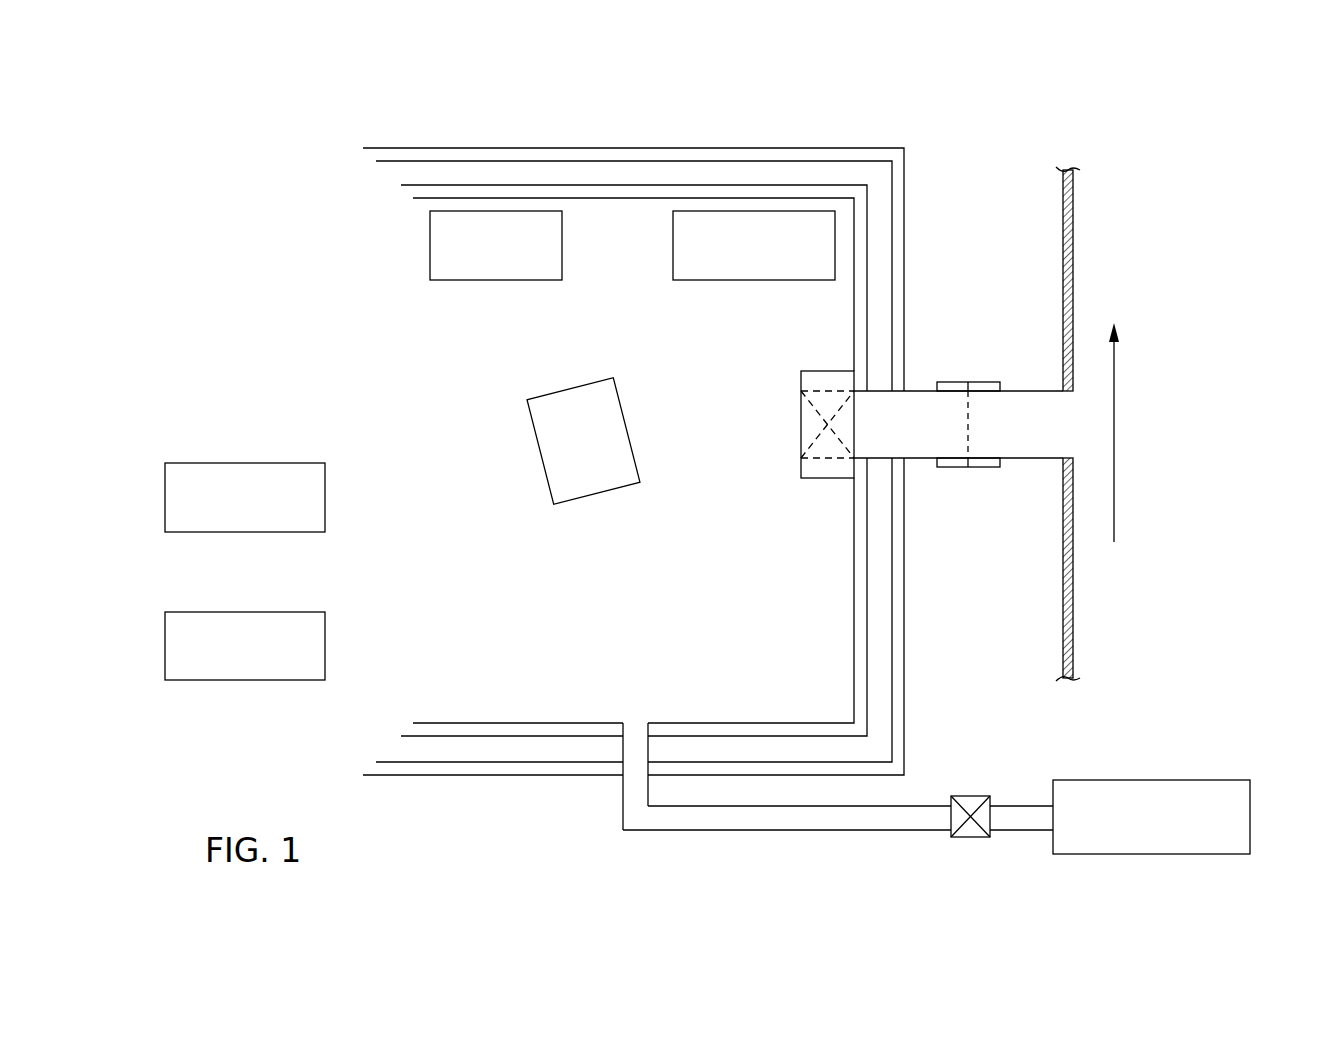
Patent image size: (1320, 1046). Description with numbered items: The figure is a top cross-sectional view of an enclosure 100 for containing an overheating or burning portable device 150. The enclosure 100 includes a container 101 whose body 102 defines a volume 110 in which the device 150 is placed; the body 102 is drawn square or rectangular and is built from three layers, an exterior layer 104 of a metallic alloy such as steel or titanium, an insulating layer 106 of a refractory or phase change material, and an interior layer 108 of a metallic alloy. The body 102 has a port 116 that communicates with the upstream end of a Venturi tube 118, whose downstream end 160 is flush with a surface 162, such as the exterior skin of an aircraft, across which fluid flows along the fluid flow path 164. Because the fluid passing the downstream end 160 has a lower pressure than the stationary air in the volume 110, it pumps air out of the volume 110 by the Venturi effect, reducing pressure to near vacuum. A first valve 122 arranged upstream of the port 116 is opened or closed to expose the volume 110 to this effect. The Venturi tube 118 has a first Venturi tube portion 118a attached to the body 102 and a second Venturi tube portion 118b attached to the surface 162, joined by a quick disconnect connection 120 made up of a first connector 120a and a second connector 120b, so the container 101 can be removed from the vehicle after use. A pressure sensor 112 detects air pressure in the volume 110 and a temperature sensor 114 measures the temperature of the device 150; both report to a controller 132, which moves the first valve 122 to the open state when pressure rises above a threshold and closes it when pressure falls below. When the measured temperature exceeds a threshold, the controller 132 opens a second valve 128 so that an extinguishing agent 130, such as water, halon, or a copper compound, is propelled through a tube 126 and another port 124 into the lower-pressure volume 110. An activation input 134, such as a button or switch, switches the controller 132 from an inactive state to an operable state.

The enclosure 100 is at (336, 110).
The container 101 is at (865, 148).
The body 102 is at (904, 150).
The exterior layer 104 is at (898, 188).
The insulating layer 106 is at (878, 218).
The interior layer 108 is at (859, 268).
The volume 110 is at (605, 616).
The pressure sensor 112 is at (497, 280).
The temperature sensor 114 is at (768, 280).
The port 116 is at (897, 434).
The Venturi tube 118 is at (917, 389).
The first Venturi tube portion 118a is at (917, 459).
The second Venturi tube portion 118b is at (1036, 459).
The quick disconnect connection 120 is at (980, 368).
The first connector 120a is at (950, 388).
The second connector 120b is at (992, 380).
The first valve 122 is at (820, 480).
The port 124 is at (630, 741).
The tube 126 is at (843, 815).
The second valve 128 is at (972, 796).
The extinguishing agent 130 is at (1084, 780).
The controller 132 is at (265, 532).
The activation input 134 is at (265, 680).
The device 150 is at (582, 498).
The downstream end 160 is at (1086, 434).
The surface 162 is at (1074, 286).
The fluid flow path 164 is at (1116, 444).